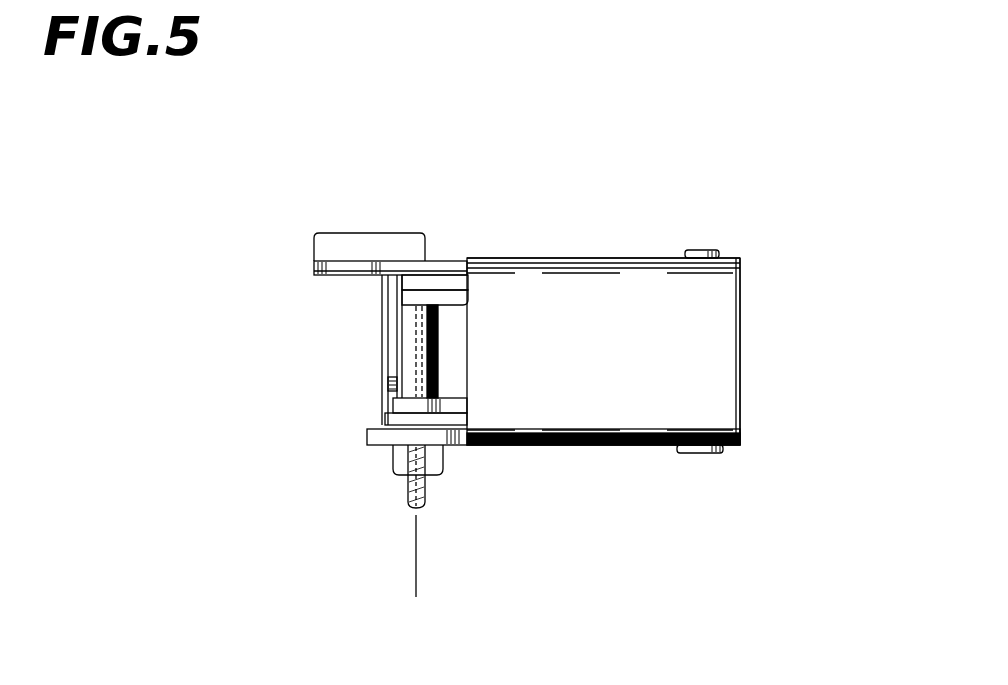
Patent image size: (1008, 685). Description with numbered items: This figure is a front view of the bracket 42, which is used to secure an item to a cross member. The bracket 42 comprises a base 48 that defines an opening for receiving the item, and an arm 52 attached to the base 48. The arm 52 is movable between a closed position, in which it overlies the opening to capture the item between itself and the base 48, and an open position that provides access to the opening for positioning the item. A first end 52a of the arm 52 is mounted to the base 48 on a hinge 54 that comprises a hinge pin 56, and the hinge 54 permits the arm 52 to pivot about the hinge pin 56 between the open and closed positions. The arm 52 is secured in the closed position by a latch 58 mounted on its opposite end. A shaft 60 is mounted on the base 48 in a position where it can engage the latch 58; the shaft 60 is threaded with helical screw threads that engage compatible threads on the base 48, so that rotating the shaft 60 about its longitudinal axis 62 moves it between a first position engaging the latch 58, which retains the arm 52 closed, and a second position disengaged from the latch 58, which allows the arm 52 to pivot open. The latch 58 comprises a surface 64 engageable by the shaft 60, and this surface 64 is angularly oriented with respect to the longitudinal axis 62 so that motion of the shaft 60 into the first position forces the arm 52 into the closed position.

The bracket 42 is at (528, 186).
The base 48 is at (370, 435).
The arm 52 is at (328, 242).
The first end of arm 52a is at (740, 342).
The hinge 54 is at (725, 288).
The hinge pin 56 is at (697, 250).
The latch 58 is at (392, 303).
The shaft 60 is at (412, 350).
The longitudinal axis 62 is at (416, 545).
The surface 64 is at (440, 320).